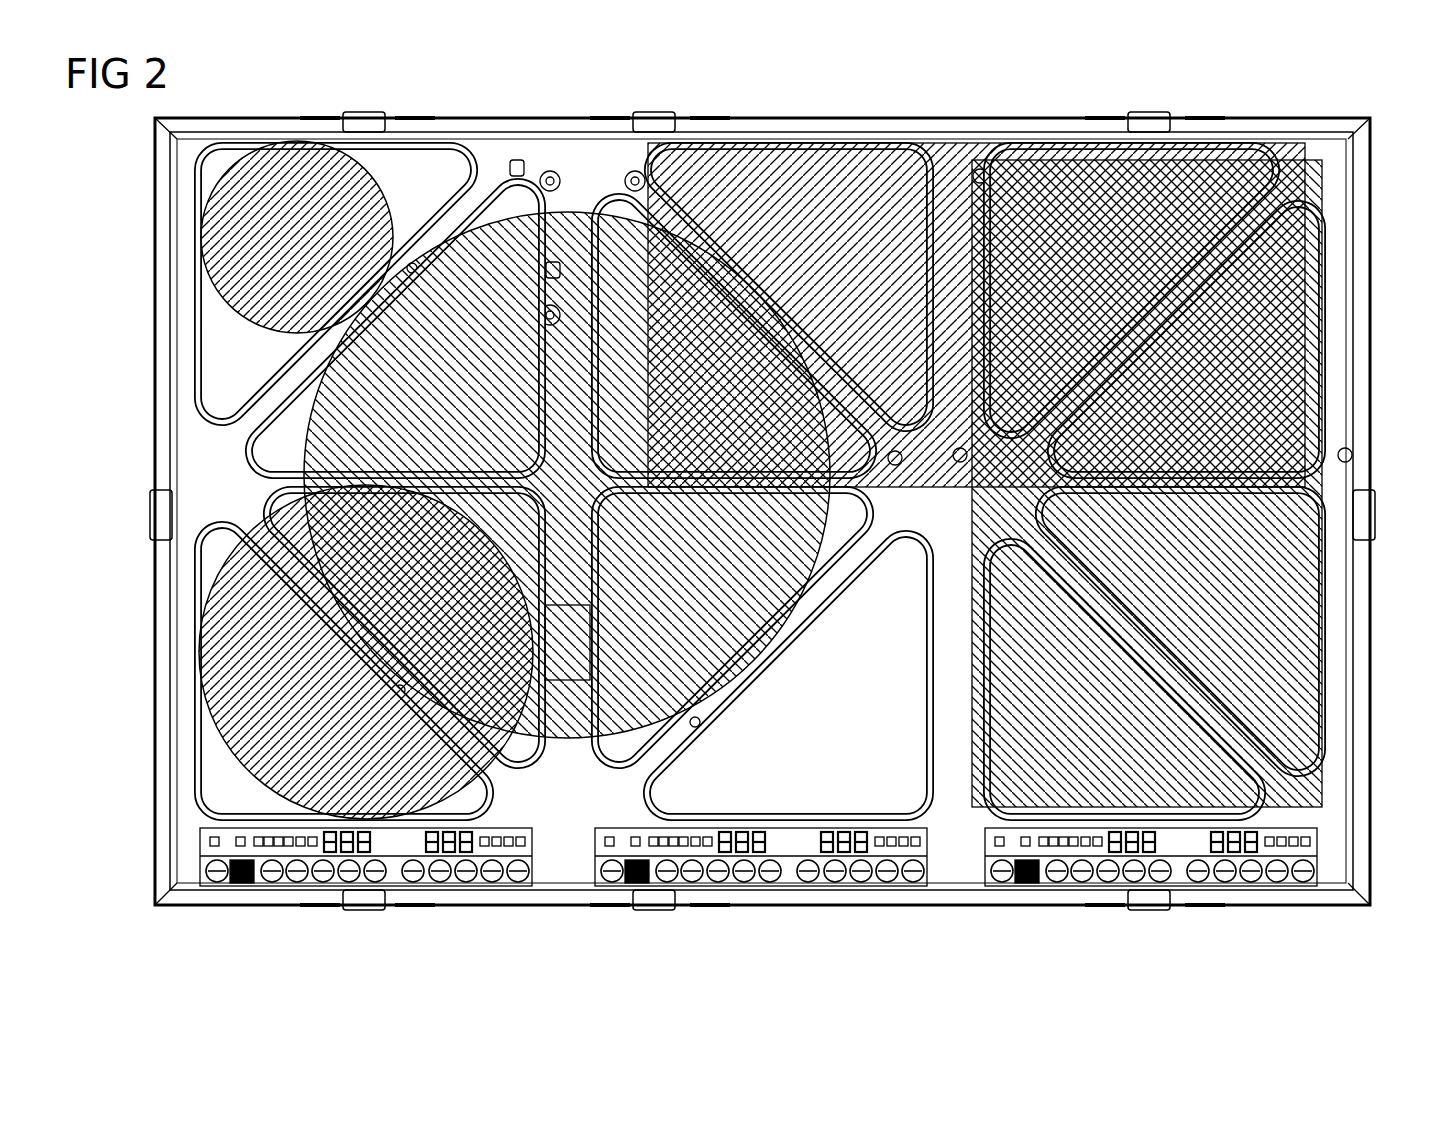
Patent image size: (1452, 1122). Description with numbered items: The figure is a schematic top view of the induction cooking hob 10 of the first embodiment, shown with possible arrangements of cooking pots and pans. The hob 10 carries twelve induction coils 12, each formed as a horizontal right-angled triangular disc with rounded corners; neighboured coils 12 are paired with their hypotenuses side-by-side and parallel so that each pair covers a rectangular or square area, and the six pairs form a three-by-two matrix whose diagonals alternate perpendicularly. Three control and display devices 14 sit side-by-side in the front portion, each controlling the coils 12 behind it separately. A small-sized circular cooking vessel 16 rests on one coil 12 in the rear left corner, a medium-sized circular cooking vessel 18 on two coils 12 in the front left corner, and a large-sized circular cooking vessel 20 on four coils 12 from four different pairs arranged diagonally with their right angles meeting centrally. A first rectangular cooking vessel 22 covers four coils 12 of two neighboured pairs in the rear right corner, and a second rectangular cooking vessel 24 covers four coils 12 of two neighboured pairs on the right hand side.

The induction cooking hob 10 is at (585, 160).
The induction coil 12 is at (290, 440).
The control and display device 14 is at (390, 840).
The small-sized circular cooking vessel 16 is at (270, 240).
The medium-sized circular cooking vessel 18 is at (270, 678).
The large-sized circular cooking vessel 20 is at (570, 710).
The first rectangular cooking vessel 22 is at (950, 210).
The second rectangular cooking vessel 24 is at (1290, 795).